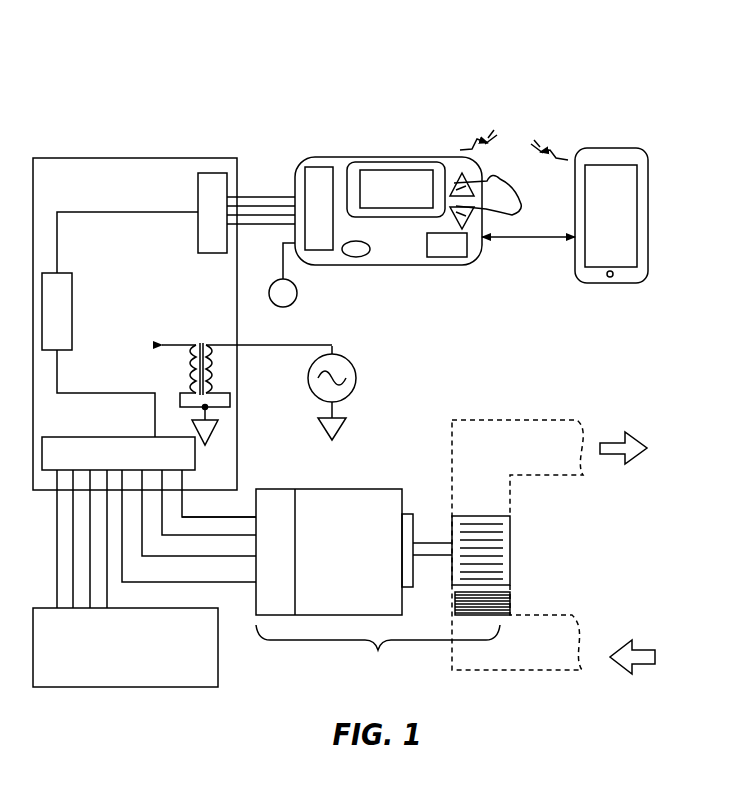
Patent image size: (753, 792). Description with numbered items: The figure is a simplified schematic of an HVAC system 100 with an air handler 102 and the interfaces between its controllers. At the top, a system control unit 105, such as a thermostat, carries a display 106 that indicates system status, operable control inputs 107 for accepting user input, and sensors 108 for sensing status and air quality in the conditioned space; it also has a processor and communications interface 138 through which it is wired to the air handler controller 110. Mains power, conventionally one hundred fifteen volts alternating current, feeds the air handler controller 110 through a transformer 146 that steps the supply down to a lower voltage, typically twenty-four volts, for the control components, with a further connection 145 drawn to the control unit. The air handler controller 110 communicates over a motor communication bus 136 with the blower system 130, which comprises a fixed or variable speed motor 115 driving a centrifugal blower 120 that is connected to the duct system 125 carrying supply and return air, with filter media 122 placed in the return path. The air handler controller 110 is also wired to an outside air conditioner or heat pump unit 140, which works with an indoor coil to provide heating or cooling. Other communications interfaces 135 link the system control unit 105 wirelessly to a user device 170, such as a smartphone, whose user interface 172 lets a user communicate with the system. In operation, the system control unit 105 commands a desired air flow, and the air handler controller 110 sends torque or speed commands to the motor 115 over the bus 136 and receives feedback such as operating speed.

The HVAC system 100 is at (602, 62).
The air handler 102 is at (405, 369).
The system control unit 105 is at (380, 157).
The display 106 is at (395, 217).
The control inputs 107 is at (499, 195).
The sensors 108 is at (451, 258).
The air handler controller 110 is at (144, 383).
The motor 115 is at (354, 552).
The centrifugal blower 120 is at (466, 515).
The filter media 122 is at (513, 601).
The duct system 125 is at (541, 420).
The blower system 130 is at (378, 651).
The communications interfaces 135 is at (520, 186).
The motor communication bus 136 is at (238, 516).
The processor and communications interface 138 is at (245, 197).
The air conditioner or heat pump unit 140 is at (125, 647).
The power connector / power source 145 is at (316, 167).
The transformer 146 is at (190, 343).
The user device 170 is at (649, 233).
The user interface 172 is at (611, 216).